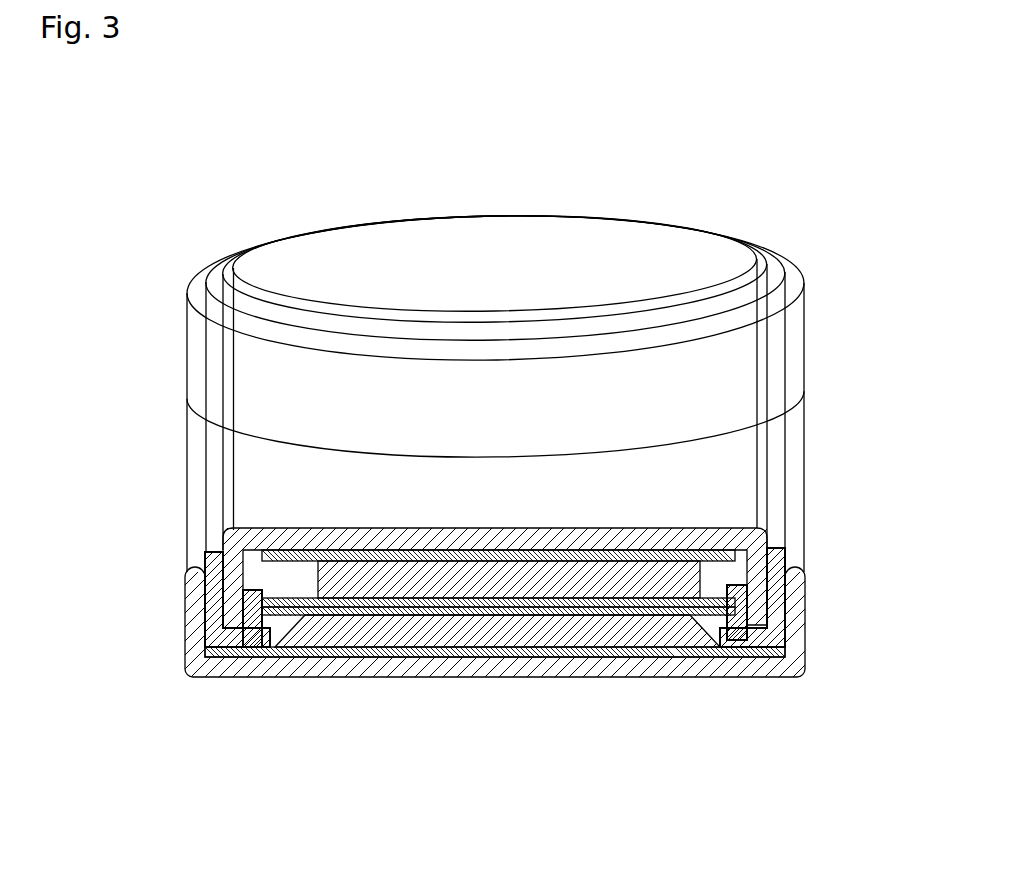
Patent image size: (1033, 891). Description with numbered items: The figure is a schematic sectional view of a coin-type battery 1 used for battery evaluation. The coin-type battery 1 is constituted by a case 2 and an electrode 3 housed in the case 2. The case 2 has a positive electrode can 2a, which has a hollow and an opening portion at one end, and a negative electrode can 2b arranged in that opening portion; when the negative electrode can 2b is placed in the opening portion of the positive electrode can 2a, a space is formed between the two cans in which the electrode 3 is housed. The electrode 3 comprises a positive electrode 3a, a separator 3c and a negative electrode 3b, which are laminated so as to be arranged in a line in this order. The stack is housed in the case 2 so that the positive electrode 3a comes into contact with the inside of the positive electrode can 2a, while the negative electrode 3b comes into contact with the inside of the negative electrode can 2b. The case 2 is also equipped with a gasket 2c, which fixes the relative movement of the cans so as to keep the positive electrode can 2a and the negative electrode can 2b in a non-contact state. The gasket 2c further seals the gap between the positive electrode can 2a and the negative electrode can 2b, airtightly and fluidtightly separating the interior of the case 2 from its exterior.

The coin-type battery 1 is at (513, 194).
The case 2 is at (890, 507).
The positive electrode can 2a is at (792, 362).
The negative electrode can 2b is at (673, 247).
The gasket 2c is at (215, 258).
The electrode 3 is at (735, 795).
The positive electrode 3a is at (547, 678).
The negative electrode 3b is at (703, 678).
The separator 3c is at (620, 678).